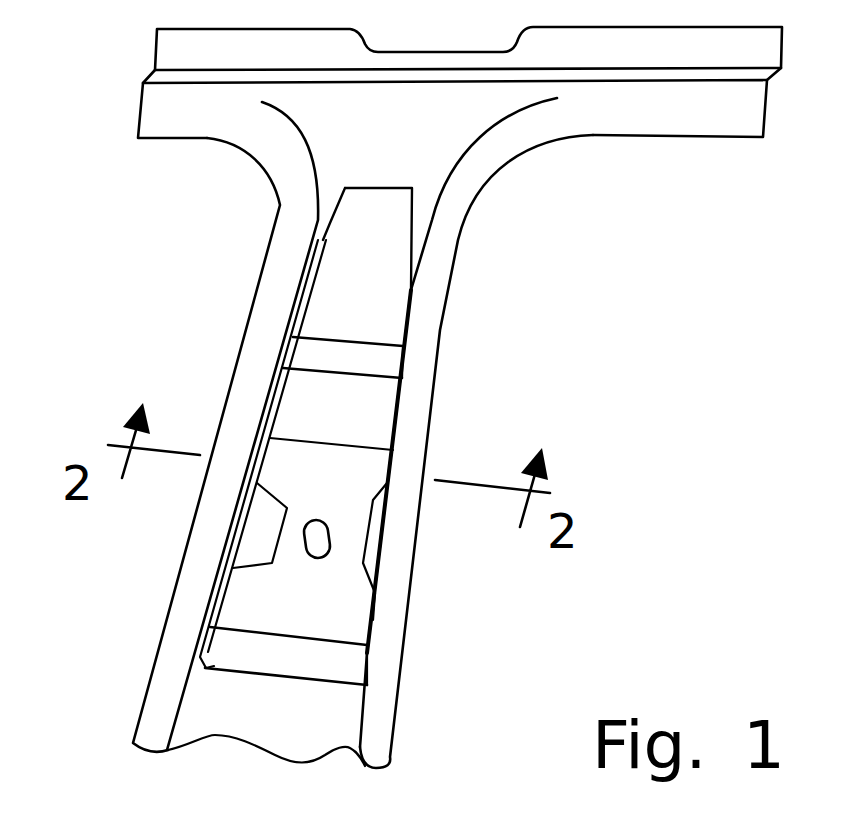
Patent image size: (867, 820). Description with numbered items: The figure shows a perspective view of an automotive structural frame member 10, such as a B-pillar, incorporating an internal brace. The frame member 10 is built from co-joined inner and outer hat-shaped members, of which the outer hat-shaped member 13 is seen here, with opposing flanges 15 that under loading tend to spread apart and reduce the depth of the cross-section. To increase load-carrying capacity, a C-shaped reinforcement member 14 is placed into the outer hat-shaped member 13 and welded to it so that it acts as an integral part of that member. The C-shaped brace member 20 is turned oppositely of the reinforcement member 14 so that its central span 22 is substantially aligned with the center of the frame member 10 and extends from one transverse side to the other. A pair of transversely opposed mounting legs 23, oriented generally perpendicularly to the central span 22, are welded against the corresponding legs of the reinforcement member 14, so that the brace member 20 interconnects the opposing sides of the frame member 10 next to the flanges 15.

The frame member 10 is at (448, 408).
The outer hat-shaped member 13 is at (410, 133).
The reinforcement member 14 is at (381, 270).
The flanges 15 is at (273, 317).
The brace member 20 is at (282, 352).
The central span 22 is at (360, 340).
The mounting legs 23 is at (400, 380).